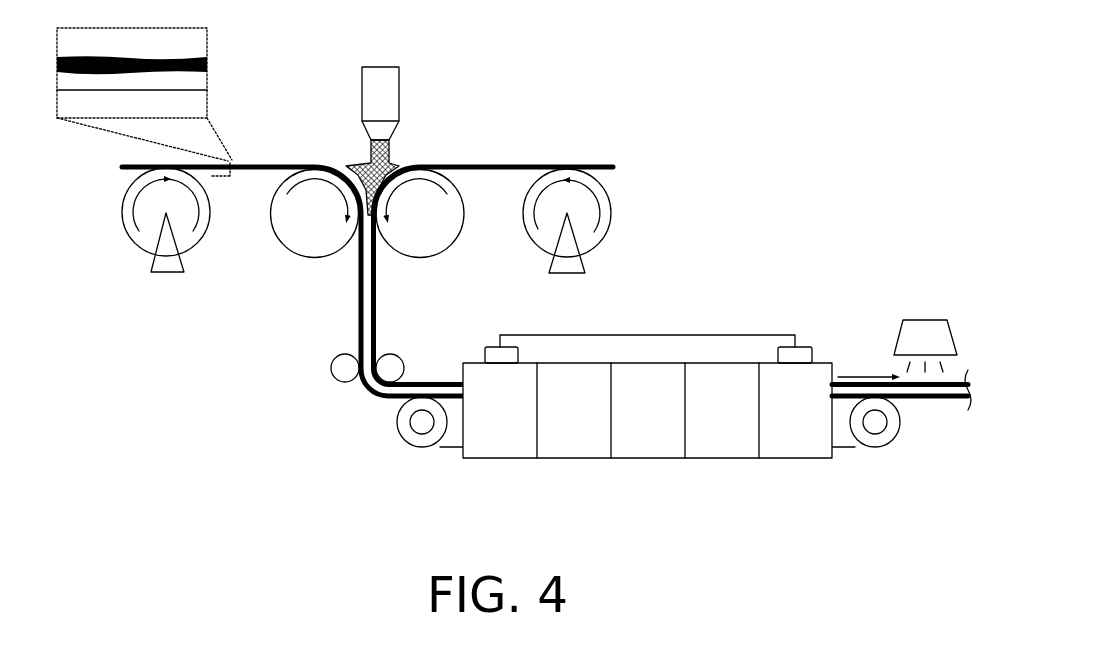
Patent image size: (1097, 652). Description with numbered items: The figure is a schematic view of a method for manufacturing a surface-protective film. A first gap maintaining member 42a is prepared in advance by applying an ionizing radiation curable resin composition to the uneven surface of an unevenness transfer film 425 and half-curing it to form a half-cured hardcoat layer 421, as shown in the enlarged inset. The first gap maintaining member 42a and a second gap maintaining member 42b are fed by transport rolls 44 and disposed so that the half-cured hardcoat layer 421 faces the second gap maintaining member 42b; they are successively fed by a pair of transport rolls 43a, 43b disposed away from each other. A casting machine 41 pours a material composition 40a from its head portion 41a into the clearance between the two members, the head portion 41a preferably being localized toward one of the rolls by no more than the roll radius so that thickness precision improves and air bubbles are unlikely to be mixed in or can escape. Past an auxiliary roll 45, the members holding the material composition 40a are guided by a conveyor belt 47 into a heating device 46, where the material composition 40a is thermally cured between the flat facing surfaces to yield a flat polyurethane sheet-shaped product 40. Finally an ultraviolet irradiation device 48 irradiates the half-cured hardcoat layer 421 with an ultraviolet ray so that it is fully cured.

The polyurethane sheet-shaped product 40 is at (938, 398).
The material composition 40a is at (370, 160).
The casting machine 41 is at (388, 92).
The head portion 41a is at (395, 136).
The first gap maintaining member 42a is at (260, 212).
The second gap maintaining member 42b is at (495, 165).
The half-cured hardcoat layer 421 is at (207, 55).
The unevenness transfer film 425 is at (207, 82).
The transport roll 43a is at (307, 252).
The transport roll 43b is at (433, 240).
The transport roll 44 is at (193, 235).
The auxiliary roll 45 is at (340, 368).
The heating device 46 is at (720, 450).
The conveyor belt 47 is at (417, 445).
The ultraviolet irradiation device 48 is at (935, 322).